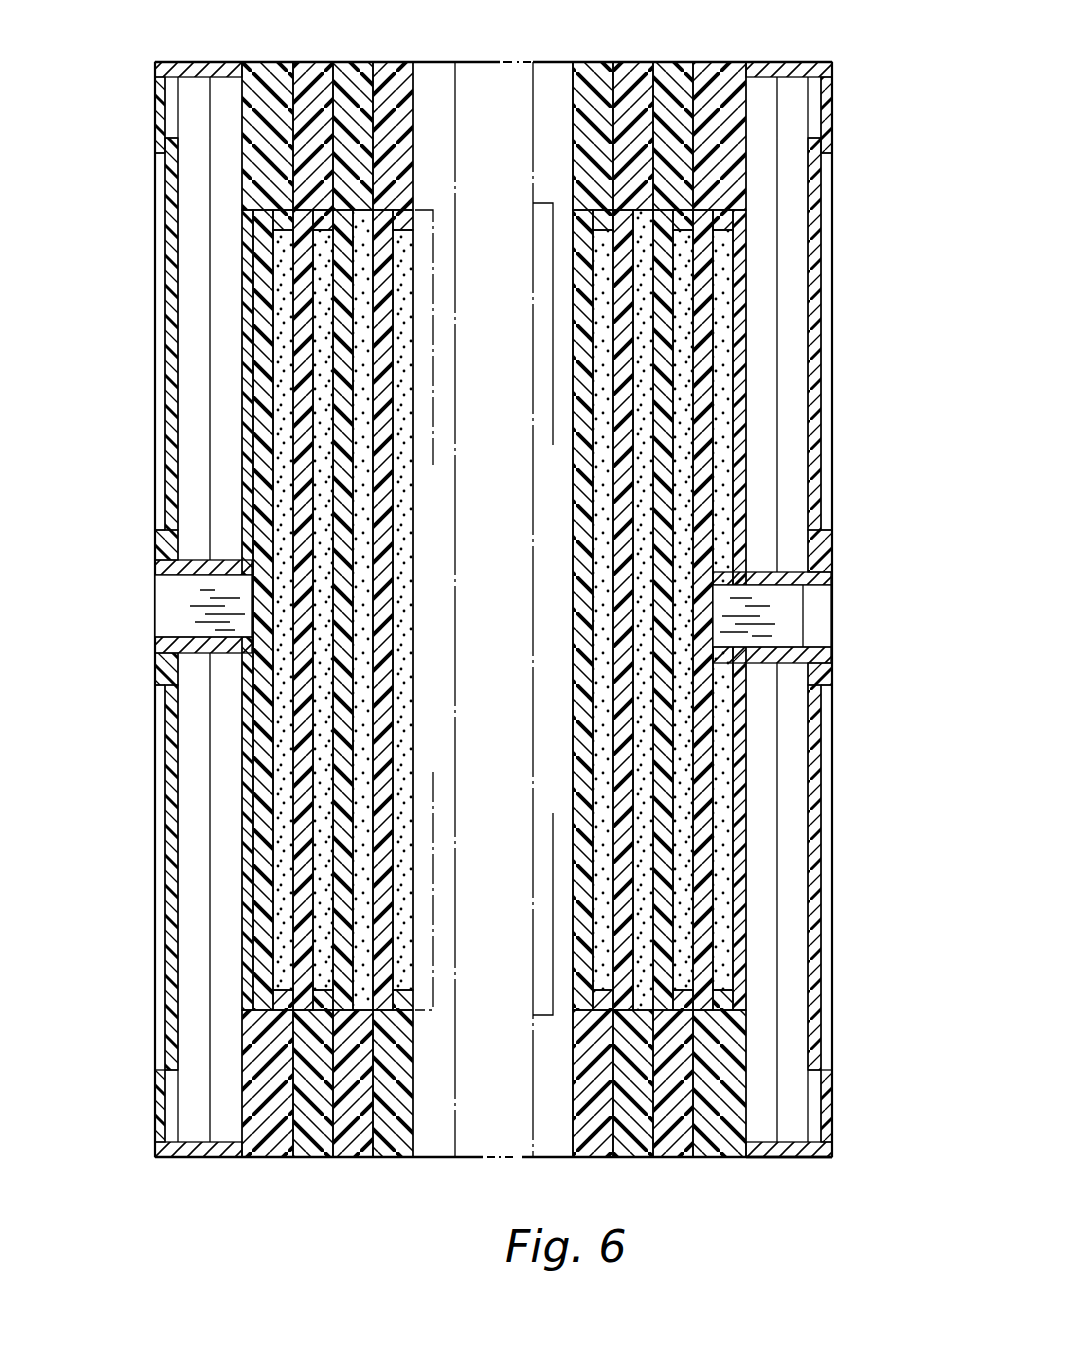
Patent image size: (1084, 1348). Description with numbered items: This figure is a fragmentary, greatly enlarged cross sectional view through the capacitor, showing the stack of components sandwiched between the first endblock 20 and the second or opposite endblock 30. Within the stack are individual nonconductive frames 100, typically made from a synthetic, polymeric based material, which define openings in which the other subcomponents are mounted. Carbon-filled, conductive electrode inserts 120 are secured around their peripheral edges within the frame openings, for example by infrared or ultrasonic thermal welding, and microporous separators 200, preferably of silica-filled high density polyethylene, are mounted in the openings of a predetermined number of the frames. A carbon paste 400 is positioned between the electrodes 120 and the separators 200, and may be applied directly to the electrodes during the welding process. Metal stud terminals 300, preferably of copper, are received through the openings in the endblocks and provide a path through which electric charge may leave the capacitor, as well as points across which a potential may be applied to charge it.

The first endblock 20 is at (777, 1160).
The second endblock 30 is at (186, 1165).
The nonconductive frame 100 is at (405, 1136).
The conductive electrode insert 120 is at (262, 224).
The microporous separator 200 is at (300, 212).
The metal stud terminal 300 is at (200, 602).
The carbon paste 400 is at (337, 228).